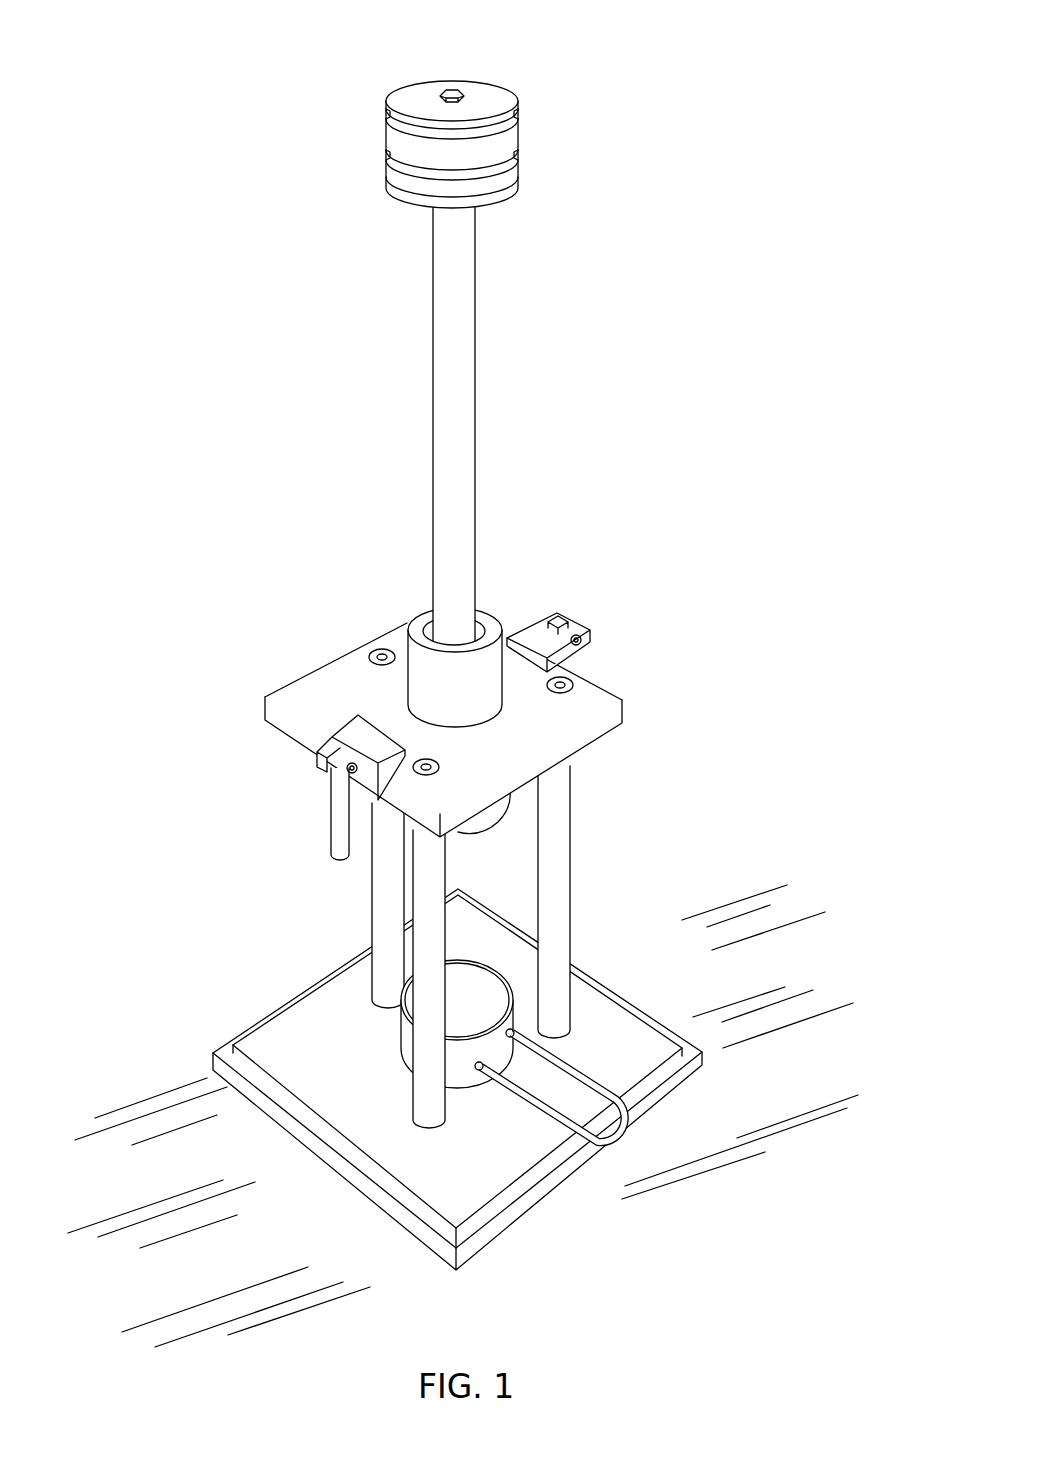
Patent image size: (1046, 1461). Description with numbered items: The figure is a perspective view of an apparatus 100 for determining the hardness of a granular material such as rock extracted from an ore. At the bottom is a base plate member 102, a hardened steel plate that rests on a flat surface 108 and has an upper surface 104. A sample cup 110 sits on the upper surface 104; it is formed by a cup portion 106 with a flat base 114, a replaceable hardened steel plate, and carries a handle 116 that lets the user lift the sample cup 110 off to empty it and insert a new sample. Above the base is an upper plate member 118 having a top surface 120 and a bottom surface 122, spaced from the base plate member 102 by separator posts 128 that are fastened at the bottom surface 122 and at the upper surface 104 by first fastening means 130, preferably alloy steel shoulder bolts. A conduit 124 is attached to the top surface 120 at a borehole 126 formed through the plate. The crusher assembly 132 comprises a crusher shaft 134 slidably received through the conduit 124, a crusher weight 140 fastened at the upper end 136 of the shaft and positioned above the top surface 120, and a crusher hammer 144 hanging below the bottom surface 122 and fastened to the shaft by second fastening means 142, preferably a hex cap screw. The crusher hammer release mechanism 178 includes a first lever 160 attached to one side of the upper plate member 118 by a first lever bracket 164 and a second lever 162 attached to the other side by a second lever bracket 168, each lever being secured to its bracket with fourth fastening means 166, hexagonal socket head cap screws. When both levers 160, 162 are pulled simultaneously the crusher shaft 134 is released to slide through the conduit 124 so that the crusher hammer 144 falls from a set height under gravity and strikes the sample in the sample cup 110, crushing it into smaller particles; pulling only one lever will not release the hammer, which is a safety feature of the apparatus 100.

The apparatus 100 is at (330, 115).
The base plate member 102 is at (579, 961).
The upper surface 104 is at (642, 1045).
The cup portion 106 is at (517, 1020).
The flat surface 108 is at (261, 1266).
The sample cup 110 is at (400, 1028).
The flat base 114 is at (462, 1025).
The handle 116 is at (624, 1152).
The upper plate member 118 is at (479, 728).
The top surface 120 is at (479, 728).
The bottom surface 122 is at (594, 740).
The conduit 124 is at (461, 618).
The borehole 126 is at (437, 626).
The separator post 128 is at (446, 1002).
The first fastening means 130 is at (371, 652).
The crusher assembly 132 is at (469, 331).
The crusher shaft 134 is at (478, 400).
The upper end 136 is at (480, 202).
The crusher weight 140 is at (520, 131).
The second fastening means 142 is at (456, 86).
The crusher hammer 144 is at (507, 818).
The first lever 160 is at (336, 850).
The second lever 162 is at (575, 618).
The first lever bracket 164 is at (307, 806).
The fourth fastening means 166 is at (581, 640).
The second lever bracket 168 is at (531, 641).
The crusher hammer release mechanism 178 is at (439, 711).